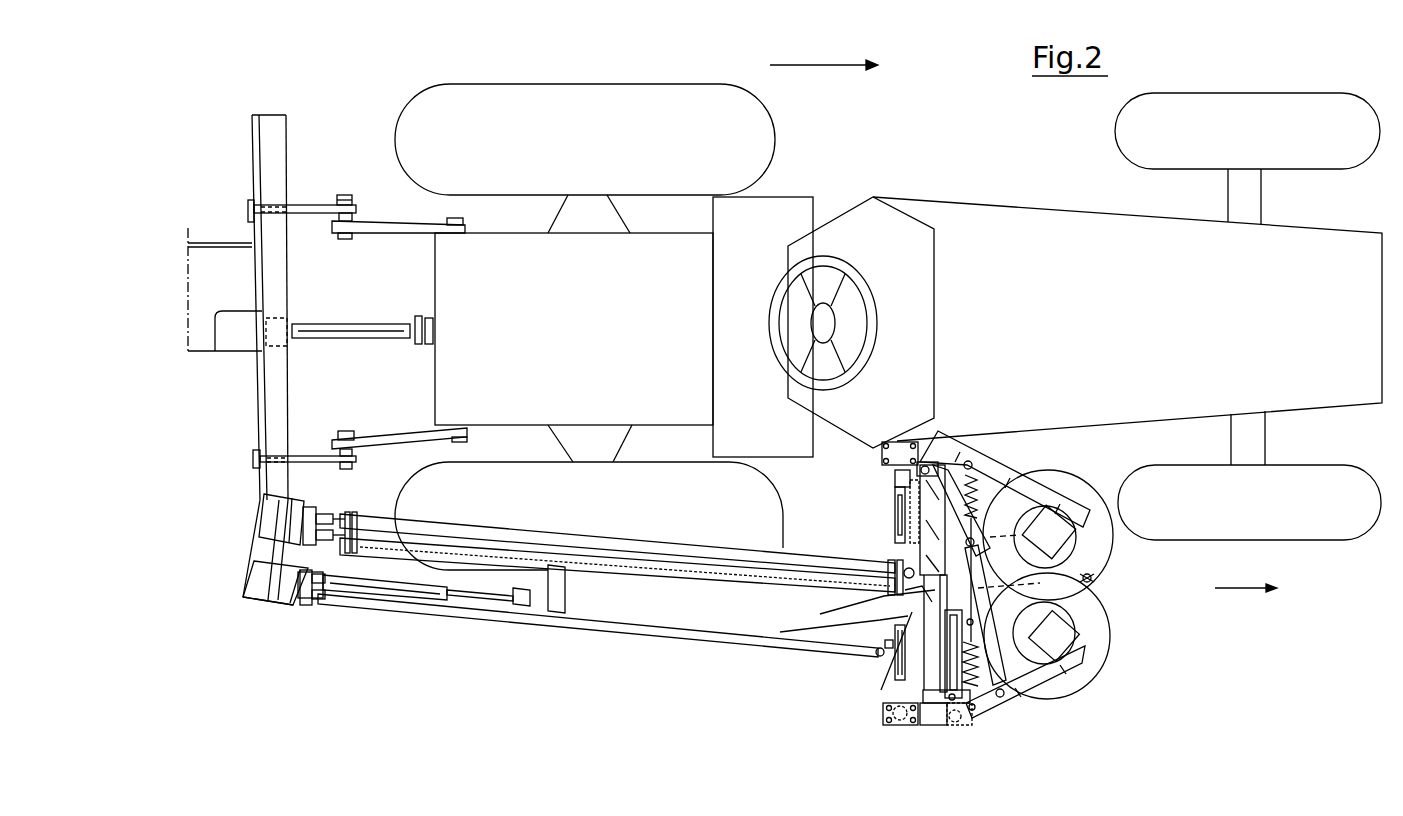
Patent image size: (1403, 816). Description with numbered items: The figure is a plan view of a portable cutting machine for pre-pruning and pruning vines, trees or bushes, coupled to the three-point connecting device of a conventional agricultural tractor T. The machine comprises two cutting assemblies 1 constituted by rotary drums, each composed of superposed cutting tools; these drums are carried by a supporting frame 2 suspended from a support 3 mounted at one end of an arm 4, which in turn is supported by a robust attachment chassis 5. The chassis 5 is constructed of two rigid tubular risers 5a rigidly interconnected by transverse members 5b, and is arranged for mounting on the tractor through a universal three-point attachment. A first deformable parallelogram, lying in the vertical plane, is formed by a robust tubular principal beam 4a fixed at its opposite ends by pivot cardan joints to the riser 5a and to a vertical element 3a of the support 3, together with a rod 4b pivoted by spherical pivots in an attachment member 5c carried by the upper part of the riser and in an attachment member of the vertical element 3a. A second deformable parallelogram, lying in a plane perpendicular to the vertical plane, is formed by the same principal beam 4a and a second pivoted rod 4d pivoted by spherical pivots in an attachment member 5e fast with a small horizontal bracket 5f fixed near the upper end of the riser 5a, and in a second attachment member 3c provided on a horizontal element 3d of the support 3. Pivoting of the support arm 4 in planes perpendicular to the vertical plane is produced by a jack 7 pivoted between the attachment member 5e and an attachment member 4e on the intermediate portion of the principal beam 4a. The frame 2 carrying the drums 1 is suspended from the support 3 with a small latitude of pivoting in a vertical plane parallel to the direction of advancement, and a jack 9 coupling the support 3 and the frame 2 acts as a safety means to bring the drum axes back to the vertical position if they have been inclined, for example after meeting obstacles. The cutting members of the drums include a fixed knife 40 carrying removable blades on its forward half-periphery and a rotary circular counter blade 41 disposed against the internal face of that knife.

The agricultural tractor T is at (908, 180).
The cutting assembly 1 is at (1108, 602).
The supporting frame 2 is at (980, 730).
The support 3 is at (852, 642).
The vertical element 3a is at (822, 615).
The second attachment member 3c is at (903, 650).
The horizontal element 3d is at (898, 678).
The arm 4 is at (734, 591).
The principal beam 4a is at (655, 564).
The rod 4b is at (612, 558).
The second pivoted rod 4d is at (450, 613).
The attachment member 4e is at (557, 598).
The attachment chassis 5 is at (243, 437).
The tubular riser 5a is at (278, 511).
The transverse member 5b is at (276, 391).
The attachment member 5c is at (288, 545).
The attachment member 5e is at (306, 605).
The horizontal bracket 5f is at (252, 572).
The jack 7 is at (393, 587).
The jack 9 is at (1092, 578).
The fixed knife 40 is at (876, 596).
The rotary circular counter blade 41 is at (893, 648).